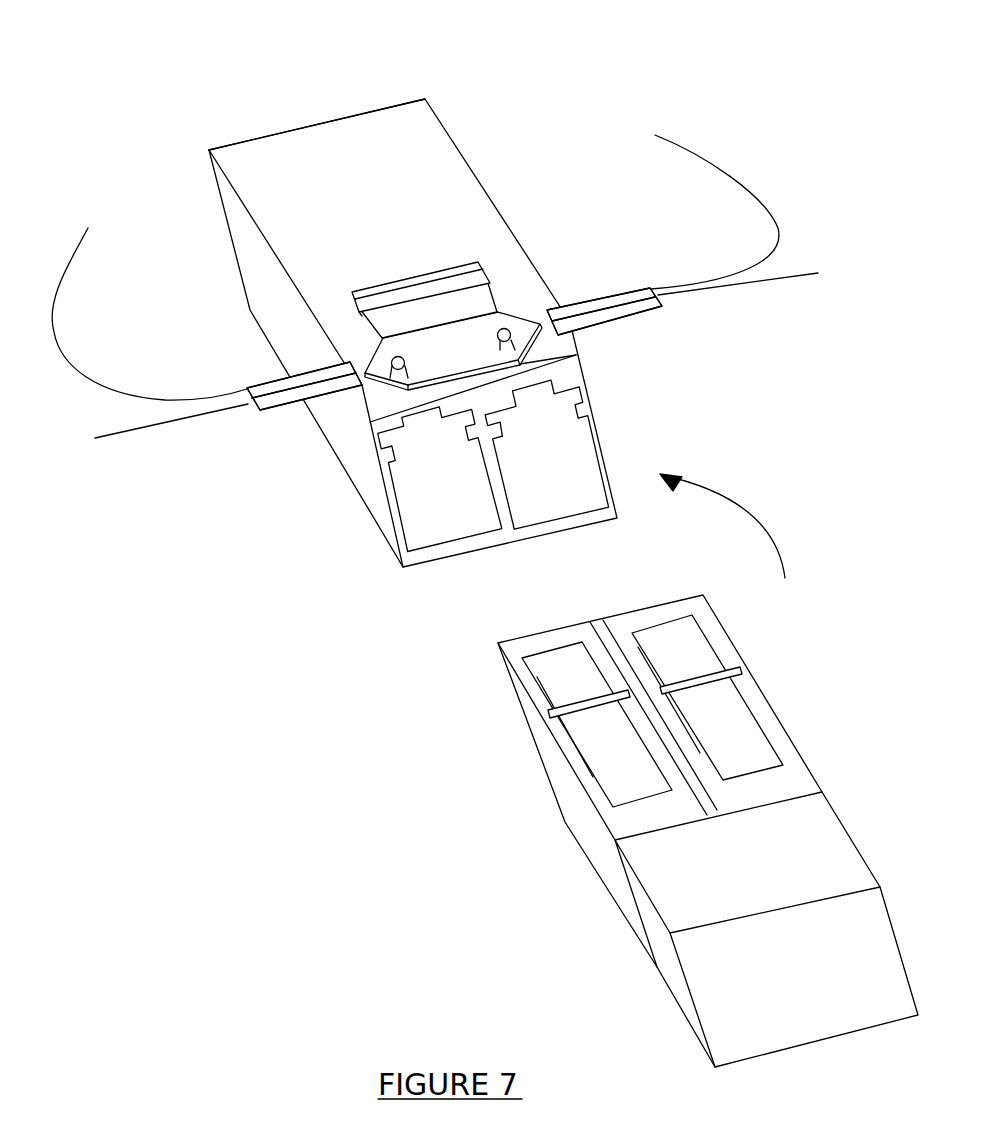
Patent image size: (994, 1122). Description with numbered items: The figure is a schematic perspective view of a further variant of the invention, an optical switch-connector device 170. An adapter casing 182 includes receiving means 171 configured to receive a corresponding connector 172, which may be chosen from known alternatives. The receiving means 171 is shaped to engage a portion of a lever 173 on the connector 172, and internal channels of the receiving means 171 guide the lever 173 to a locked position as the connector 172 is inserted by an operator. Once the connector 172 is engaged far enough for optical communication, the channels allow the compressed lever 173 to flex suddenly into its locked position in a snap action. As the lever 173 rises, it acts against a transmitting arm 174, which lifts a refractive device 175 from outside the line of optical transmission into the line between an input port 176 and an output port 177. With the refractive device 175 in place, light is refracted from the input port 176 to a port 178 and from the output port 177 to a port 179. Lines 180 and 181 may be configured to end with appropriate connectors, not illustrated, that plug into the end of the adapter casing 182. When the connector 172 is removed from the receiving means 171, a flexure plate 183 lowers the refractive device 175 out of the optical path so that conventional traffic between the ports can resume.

The optical switch-connector device 170 is at (736, 526).
The receiving means 171 is at (417, 533).
The connector 172 is at (543, 753).
The lever 173 is at (552, 672).
The transmitting arm 174 is at (393, 376).
The refractive device 175 is at (520, 333).
The input port 176 is at (263, 420).
The output port 177 is at (613, 318).
The port 178 is at (607, 294).
The port 179 is at (260, 382).
The line 180 is at (67, 370).
The line 181 is at (707, 157).
The adapter casing 182 is at (284, 128).
The flexure plate 183 is at (478, 305).